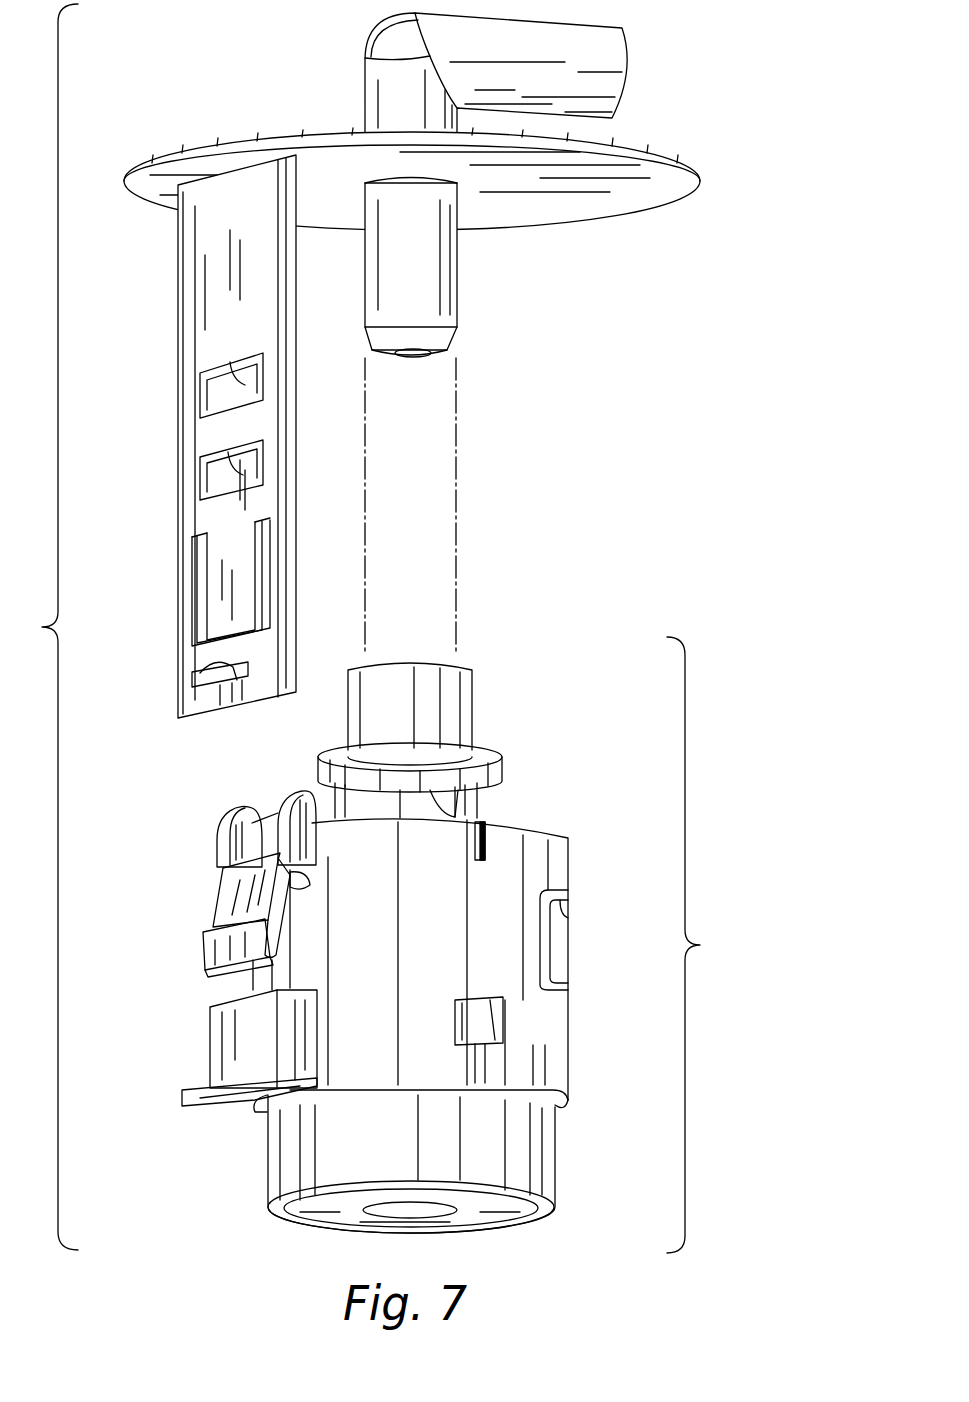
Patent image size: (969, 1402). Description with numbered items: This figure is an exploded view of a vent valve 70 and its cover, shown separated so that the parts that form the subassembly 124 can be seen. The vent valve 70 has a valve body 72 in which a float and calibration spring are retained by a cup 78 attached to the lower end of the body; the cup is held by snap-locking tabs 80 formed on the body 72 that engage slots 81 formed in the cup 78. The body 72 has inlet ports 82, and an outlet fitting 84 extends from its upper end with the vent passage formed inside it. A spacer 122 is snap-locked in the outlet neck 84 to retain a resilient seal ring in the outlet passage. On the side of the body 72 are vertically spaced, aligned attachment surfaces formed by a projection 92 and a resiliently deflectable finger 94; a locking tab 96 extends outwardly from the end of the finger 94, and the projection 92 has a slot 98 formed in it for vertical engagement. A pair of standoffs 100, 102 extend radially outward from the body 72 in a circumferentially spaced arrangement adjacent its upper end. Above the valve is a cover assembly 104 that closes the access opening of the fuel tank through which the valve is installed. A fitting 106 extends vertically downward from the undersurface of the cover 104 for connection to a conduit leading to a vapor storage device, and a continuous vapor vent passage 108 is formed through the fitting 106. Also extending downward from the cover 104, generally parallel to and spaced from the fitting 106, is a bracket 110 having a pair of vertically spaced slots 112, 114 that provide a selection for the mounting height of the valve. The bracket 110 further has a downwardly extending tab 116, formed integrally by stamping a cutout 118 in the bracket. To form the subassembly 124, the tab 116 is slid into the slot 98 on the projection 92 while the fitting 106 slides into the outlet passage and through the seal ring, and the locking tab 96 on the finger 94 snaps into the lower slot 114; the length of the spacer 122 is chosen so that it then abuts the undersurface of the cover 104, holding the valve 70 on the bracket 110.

The vent valve 70 is at (698, 945).
The valve body 72 is at (568, 872).
The cup 78 is at (323, 1228).
The snap-locking tabs 80 is at (500, 1012).
The slots 81 is at (503, 1030).
The inlet ports 82 is at (545, 938).
The outlet fitting 84 is at (503, 768).
The projection 92 is at (230, 1037).
The resiliently deflectable finger 94 is at (243, 892).
The locking tab 96 is at (210, 947).
The slot 98 is at (232, 1105).
The standoff 100 is at (297, 790).
The standoff 102 is at (227, 845).
The cover assembly 104 is at (308, 132).
The fitting 106 is at (433, 268).
The vapor vent passage 108 is at (413, 360).
The bracket 110 is at (180, 287).
The slot 112 is at (213, 393).
The slot 114 is at (233, 483).
The tab 116 is at (237, 594).
The cutout 118 is at (220, 662).
The spacer 122 is at (460, 700).
The subassembly 124 is at (39, 627).